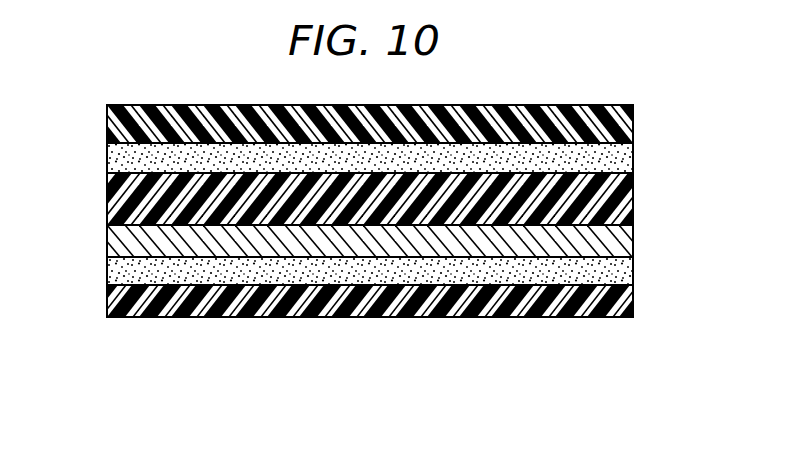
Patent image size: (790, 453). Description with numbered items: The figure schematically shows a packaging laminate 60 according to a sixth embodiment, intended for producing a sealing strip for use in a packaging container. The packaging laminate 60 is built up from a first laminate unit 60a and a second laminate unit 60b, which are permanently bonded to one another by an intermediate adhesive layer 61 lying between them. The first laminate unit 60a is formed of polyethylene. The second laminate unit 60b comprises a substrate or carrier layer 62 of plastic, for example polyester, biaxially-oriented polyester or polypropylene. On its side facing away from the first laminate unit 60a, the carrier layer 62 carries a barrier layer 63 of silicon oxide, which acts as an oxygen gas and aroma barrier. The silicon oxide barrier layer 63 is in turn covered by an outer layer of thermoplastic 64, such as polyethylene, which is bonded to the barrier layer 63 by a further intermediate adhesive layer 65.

The packaging laminate 60 is at (644, 81).
The first laminate unit 60a is at (640, 106).
The second laminate unit 60b is at (640, 175).
The intermediate adhesive layer 61 is at (107, 158).
The carrier layer 62 is at (107, 199).
The barrier layer 63 is at (107, 238).
The outer layer of thermoplastic 64 is at (107, 300).
The intermediate adhesive layer 65 is at (107, 269).